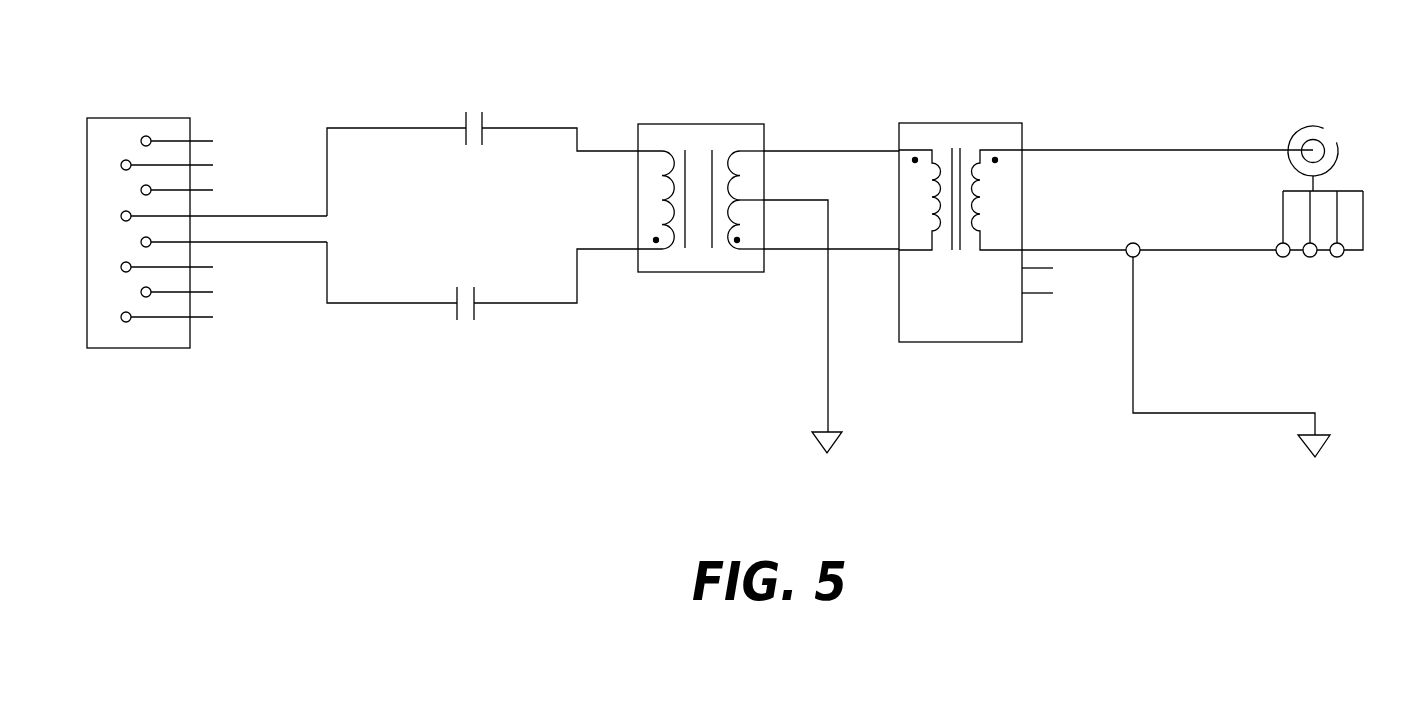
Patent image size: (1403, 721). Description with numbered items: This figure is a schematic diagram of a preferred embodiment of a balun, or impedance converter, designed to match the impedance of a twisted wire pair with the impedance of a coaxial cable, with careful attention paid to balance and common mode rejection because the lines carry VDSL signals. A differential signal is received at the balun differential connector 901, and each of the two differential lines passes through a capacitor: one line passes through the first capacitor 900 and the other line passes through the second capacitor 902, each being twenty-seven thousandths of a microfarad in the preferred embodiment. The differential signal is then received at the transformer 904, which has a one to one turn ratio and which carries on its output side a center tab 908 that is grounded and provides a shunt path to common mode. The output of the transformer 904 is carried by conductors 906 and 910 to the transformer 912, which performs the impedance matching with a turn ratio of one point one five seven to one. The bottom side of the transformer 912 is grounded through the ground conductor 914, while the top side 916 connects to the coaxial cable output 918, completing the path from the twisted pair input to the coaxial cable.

The first capacitor 900 is at (482, 117).
The balun differential connector 901 is at (190, 338).
The second capacitor 902 is at (474, 313).
The transformer 904 is at (702, 124).
The conductor from transformer pin 6 to transformer pin 1 906 is at (817, 151).
The center tab 908 is at (828, 200).
The conductor from transformer pin 2 to transformer pin 6 910 is at (788, 249).
The transformer 912 is at (1000, 123).
The ground conductor 914 is at (1133, 353).
The top side 916 is at (1205, 150).
The coaxial cable output 918 is at (1338, 146).